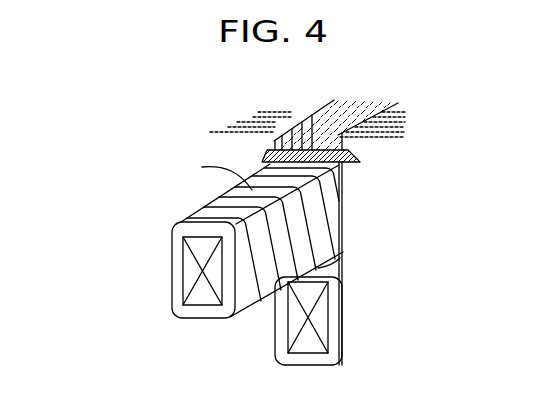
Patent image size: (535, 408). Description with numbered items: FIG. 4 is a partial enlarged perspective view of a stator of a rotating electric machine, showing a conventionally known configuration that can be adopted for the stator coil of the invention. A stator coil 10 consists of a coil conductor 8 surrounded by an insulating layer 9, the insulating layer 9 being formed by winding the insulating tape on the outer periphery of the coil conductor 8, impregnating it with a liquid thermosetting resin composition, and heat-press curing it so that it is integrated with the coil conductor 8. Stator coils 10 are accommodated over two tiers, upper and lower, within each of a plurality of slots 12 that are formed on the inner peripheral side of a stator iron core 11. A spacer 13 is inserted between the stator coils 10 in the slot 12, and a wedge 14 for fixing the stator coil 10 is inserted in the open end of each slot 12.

The coil conductor 8 is at (190, 270).
The insulating layer 9 is at (197, 227).
The stator coil 10 is at (200, 241).
The stator iron core 11 is at (244, 150).
The slot 12 is at (342, 364).
The spacer 13 is at (342, 262).
The wedge 14 is at (353, 164).